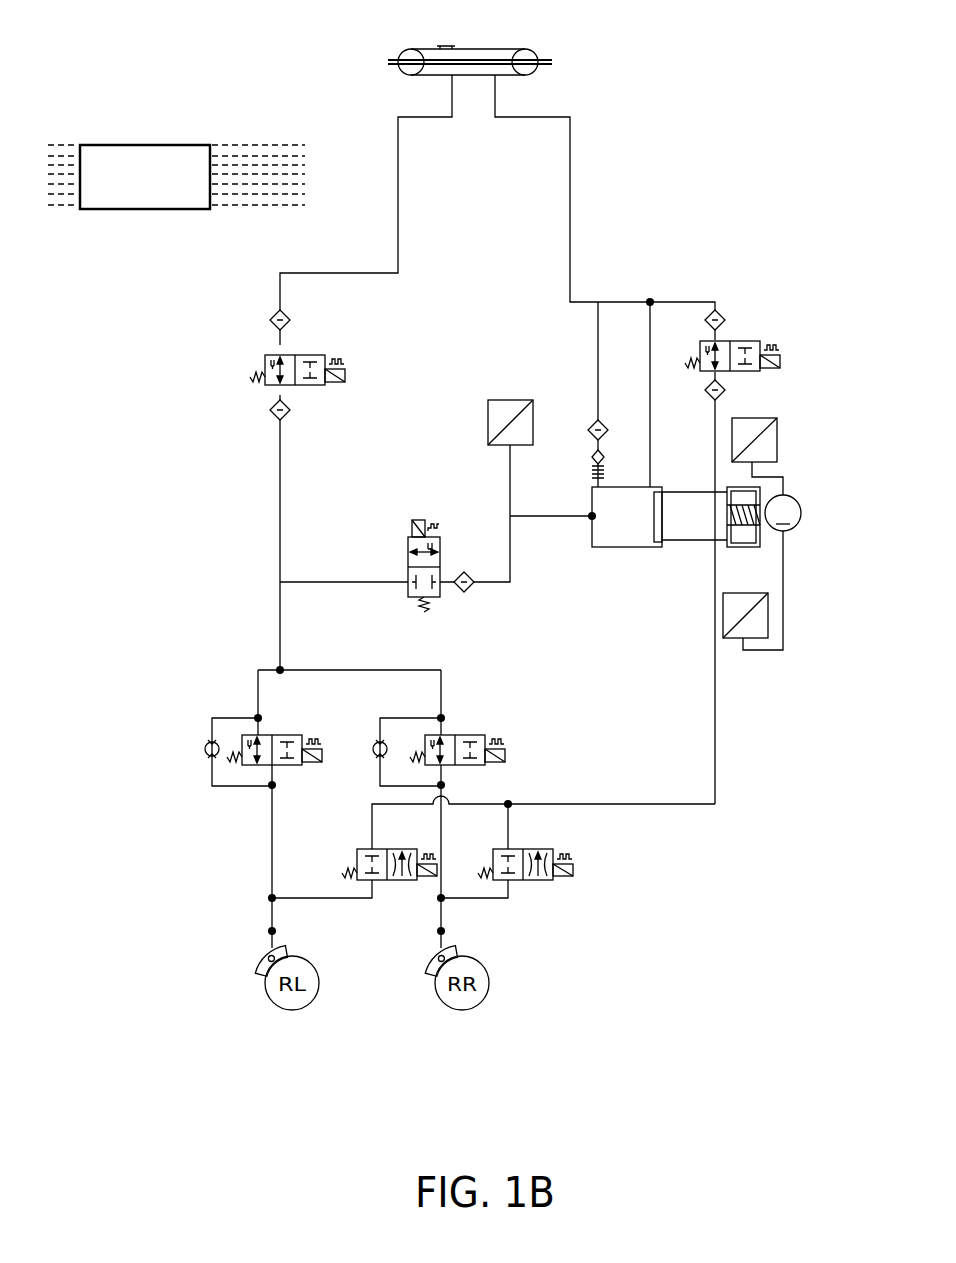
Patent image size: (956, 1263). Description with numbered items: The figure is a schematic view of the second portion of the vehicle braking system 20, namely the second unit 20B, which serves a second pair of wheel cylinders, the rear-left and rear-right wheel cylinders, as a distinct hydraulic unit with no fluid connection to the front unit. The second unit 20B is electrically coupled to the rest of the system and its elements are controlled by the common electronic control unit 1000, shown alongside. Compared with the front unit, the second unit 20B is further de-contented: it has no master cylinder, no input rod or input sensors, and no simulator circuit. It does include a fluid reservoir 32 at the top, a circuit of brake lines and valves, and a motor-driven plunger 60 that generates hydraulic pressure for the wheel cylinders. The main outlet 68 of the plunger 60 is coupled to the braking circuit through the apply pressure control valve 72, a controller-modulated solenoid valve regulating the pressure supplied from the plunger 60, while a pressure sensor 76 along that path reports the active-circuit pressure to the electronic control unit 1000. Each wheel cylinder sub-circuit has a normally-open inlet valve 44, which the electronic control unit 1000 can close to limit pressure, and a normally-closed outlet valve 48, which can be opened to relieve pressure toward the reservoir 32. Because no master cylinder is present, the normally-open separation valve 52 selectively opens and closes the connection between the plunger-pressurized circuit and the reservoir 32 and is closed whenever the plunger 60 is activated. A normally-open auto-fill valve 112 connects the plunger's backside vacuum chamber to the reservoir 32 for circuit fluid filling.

The braking system 20 is at (128, 70).
The second unit 20B is at (637, 241).
The electronic control unit (ECU) 1000 is at (152, 145).
The fluid reservoir 32 is at (533, 57).
The separation valve 52 is at (300, 385).
The auto-fill valve 112 is at (742, 341).
The pressure sensor 76 is at (480, 413).
The apply pressure control valve 72 is at (408, 548).
The plunger 60 is at (675, 470).
The outlet 68 is at (592, 517).
The inlet valve 44 is at (282, 735).
The outlet valve 48 is at (393, 881).